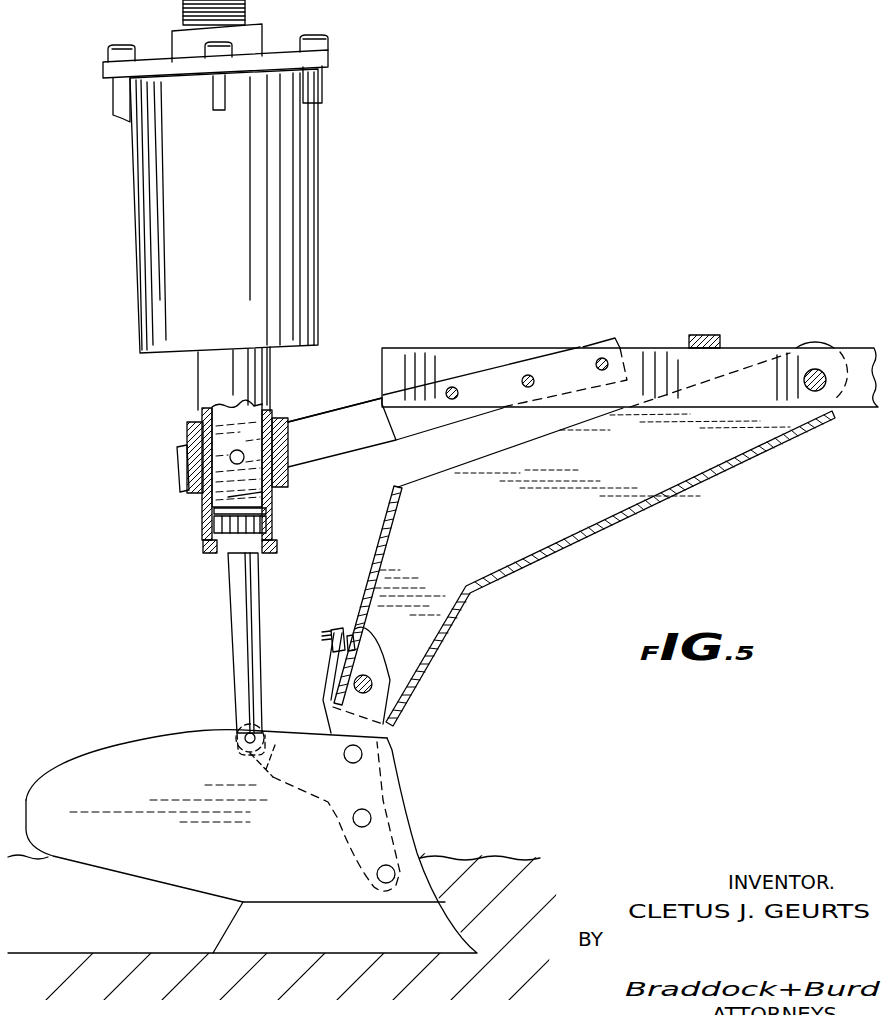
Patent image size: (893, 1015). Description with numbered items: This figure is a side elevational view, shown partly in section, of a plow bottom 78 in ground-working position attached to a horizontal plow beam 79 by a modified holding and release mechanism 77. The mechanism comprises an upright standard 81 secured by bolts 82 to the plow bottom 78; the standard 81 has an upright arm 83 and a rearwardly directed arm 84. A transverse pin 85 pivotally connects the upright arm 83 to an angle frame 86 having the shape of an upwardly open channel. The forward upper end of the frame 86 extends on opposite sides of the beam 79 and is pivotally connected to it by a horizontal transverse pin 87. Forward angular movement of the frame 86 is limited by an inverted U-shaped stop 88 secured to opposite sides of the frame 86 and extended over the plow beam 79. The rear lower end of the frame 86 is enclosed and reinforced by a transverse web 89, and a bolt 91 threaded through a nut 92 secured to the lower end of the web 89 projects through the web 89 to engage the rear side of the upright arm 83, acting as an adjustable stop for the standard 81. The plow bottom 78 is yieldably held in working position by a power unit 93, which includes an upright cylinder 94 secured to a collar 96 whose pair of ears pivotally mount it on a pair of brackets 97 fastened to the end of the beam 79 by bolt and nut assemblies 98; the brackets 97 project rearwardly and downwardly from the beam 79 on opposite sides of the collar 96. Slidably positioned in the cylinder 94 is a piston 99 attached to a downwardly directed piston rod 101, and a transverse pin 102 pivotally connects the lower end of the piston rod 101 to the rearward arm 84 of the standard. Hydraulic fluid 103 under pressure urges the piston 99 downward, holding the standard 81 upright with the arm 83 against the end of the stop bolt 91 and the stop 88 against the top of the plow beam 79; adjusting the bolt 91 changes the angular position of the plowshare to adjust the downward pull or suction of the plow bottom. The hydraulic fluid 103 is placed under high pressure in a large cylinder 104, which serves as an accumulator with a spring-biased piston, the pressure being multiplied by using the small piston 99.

The holding and release mechanism 77 is at (201, 476).
The plow bottom 78 is at (242, 833).
The plow beam 79 is at (630, 346).
The upright standard 81 is at (388, 738).
The bolts 82 is at (388, 868).
The upright arm 83 is at (401, 671).
The rearwardly directed arm 84 is at (273, 777).
The transverse pin 85 is at (373, 683).
The angle frame 86 is at (598, 528).
The horizontal transverse pin 87 is at (820, 372).
The inverted U-shaped stop 88 is at (708, 335).
The transverse web 89 is at (380, 528).
The bolt 91 is at (322, 634).
The nut 92 is at (340, 630).
The power unit 93 is at (220, 176).
The upright cylinder 94 is at (198, 388).
The collar 96 is at (457, 396).
The brackets 97 is at (347, 410).
The bolt and nut assemblies 98 is at (527, 380).
The piston 99 is at (210, 525).
The piston rod 101 is at (235, 583).
The transverse pin 102 is at (246, 742).
The hydraulic fluid 103 is at (250, 492).
The large cylinder 104 is at (300, 218).